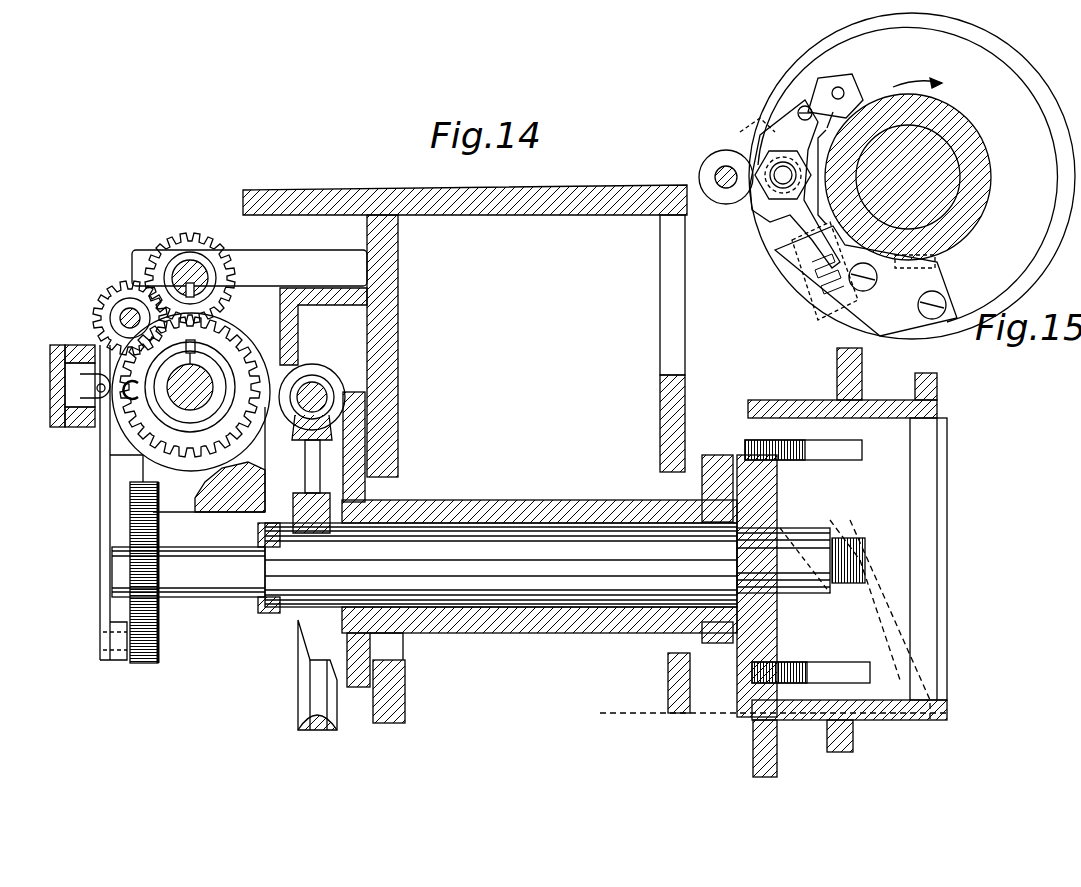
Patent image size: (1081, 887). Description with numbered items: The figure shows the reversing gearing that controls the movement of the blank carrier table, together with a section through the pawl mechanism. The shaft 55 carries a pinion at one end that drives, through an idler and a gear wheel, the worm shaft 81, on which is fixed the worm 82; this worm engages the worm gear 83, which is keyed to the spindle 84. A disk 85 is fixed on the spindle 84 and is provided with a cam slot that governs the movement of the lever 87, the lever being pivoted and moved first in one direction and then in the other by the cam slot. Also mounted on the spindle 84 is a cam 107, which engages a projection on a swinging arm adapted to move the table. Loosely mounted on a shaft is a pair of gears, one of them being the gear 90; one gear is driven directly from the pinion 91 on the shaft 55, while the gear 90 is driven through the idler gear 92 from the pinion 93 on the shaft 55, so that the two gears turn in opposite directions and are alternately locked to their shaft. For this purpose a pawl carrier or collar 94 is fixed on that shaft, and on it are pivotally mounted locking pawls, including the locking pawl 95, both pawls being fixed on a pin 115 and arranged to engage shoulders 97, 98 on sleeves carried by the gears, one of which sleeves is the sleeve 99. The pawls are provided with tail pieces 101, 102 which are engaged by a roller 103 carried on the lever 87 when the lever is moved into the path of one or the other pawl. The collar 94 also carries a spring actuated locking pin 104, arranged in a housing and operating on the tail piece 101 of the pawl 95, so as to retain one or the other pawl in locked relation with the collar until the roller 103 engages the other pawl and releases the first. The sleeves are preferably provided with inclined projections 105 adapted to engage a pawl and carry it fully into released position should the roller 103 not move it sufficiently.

In FIG. 14, the shaft 55 is at (210, 272).
In FIG. 14, the worm shaft 81 is at (327, 400).
In FIG. 14, the worm 82 is at (318, 382).
In FIG. 14, the worm gear 83 is at (300, 680).
In FIG. 14, the spindle 84 is at (488, 566).
In FIG. 14, the disk 85 is at (147, 604).
In FIG. 14, the lever 87 is at (106, 527).
In FIG. 14, the gear 90 is at (134, 392).
In FIG. 14, the pinion 91 is at (187, 240).
In FIG. 14, the idler gear 92 is at (110, 300).
In FIG. 14, the pinion 93 is at (202, 252).
In FIG. 14, the pawl carrier 94 is at (172, 462).
In FIG. 15, the pawl carrier 94 is at (912, 176).
In FIG. 15, the locking pawl 95 is at (826, 85).
In FIG. 15, the shoulder 97 is at (828, 125).
In FIG. 15, the shoulder 98 is at (935, 262).
In FIG. 14, the sleeve 99 is at (207, 372).
In FIG. 15, the sleeve 99 is at (945, 120).
In FIG. 15, the tail piece 101 is at (792, 212).
In FIG. 15, the tail piece 102 is at (760, 127).
In FIG. 14, the roller 103 is at (80, 372).
In FIG. 15, the roller 103 is at (726, 200).
In FIG. 15, the spring actuated locking pin 104 is at (795, 278).
In FIG. 15, the inclined projection 105 is at (920, 303).
In FIG. 14, the cam 107 is at (872, 715).
In FIG. 15, the pin 115 is at (768, 163).